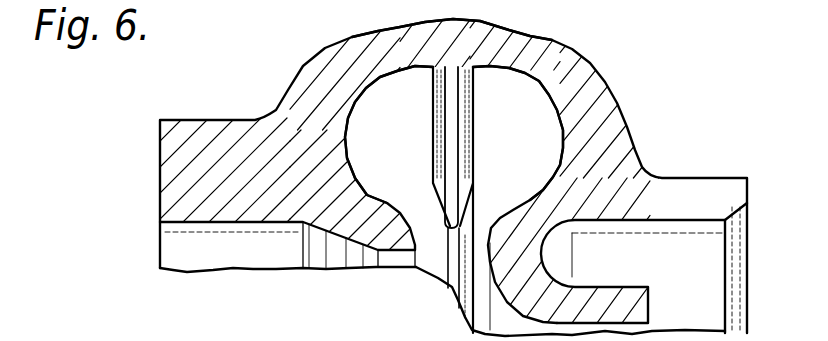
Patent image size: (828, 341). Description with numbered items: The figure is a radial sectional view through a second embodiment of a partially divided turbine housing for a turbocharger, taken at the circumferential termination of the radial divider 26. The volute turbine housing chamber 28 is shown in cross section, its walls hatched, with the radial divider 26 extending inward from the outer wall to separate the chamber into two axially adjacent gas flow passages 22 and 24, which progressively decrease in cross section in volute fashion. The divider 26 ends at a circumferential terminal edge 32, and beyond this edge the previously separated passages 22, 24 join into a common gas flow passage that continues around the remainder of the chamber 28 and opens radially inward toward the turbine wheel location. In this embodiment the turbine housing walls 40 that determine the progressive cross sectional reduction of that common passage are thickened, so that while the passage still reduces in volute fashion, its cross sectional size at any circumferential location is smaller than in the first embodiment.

The gas flow passage 22 is at (383, 110).
The gas flow passage 24 is at (509, 115).
The radial divider 26 is at (494, 62).
The housing chamber 28 is at (419, 96).
The circumferential terminal edge 32 is at (446, 221).
The turbine housing walls 40 is at (316, 150).